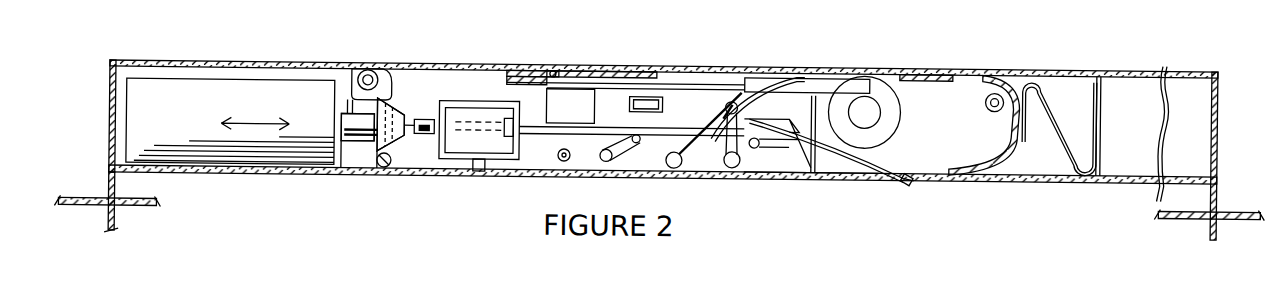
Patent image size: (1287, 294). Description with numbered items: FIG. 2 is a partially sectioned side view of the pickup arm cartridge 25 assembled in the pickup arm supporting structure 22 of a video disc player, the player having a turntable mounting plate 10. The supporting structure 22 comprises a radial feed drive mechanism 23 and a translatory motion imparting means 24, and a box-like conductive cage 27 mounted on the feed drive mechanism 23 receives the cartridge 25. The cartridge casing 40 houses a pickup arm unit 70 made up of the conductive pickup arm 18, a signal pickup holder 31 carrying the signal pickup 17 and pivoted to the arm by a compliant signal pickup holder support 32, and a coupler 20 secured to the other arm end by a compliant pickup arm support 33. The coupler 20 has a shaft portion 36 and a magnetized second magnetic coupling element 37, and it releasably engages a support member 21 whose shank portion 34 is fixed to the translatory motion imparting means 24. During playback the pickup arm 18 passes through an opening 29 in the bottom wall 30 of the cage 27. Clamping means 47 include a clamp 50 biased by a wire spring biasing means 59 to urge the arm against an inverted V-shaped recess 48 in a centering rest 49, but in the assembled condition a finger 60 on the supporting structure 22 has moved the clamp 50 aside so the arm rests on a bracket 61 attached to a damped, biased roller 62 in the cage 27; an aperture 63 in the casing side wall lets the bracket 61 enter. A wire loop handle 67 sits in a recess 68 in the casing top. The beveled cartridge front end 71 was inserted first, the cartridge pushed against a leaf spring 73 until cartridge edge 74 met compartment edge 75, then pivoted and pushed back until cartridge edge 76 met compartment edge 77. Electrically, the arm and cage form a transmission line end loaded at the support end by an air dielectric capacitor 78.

The turntable mounting plate 10 is at (82, 205).
The signal pickup 17 is at (918, 176).
The pickup arm 18 is at (595, 120).
The coupler 20 is at (404, 150).
The support member 21 is at (351, 144).
The pickup arm supporting structure 22 is at (121, 52).
The radial feed drive mechanism 23 is at (112, 186).
The translatory motion imparting means 24 is at (220, 88).
The pickup arm cartridge 25 is at (762, 55).
The box-like conductive cage 27 is at (1047, 185).
The opening 29 is at (808, 172).
The bottom wall 30 is at (778, 172).
The signal pickup holder 31 is at (908, 176).
The compliant signal pickup holder support 32 is at (862, 175).
The compliant pickup arm support 33 is at (428, 132).
The shank portion 34 is at (345, 108).
The shaft portion 36 is at (410, 108).
The second magnetic coupling element 37 is at (413, 152).
The casing 40 is at (695, 61).
The clamping means 47 is at (712, 112).
The inverted V-shaped recess 48 is at (627, 143).
The centering rest 49 is at (632, 90).
The clamp 50 is at (668, 162).
The biasing means 59 is at (758, 75).
The finger 60 is at (736, 118).
The bracket 61 is at (790, 148).
The roller 62 is at (836, 90).
The aperture 63 is at (742, 160).
The wire loop handle 67 is at (553, 64).
The recess 68 is at (530, 66).
The pickup arm unit 70 is at (798, 112).
The cartridge front end 71 is at (1017, 68).
The leaf spring 73 is at (1050, 86).
The cartridge edge 74 is at (950, 66).
The edge of the compartment 75 is at (1002, 68).
The cartridge edge 76 is at (374, 92).
The edge of the compartment 77 is at (352, 106).
The air dielectric capacitor 78 is at (530, 111).